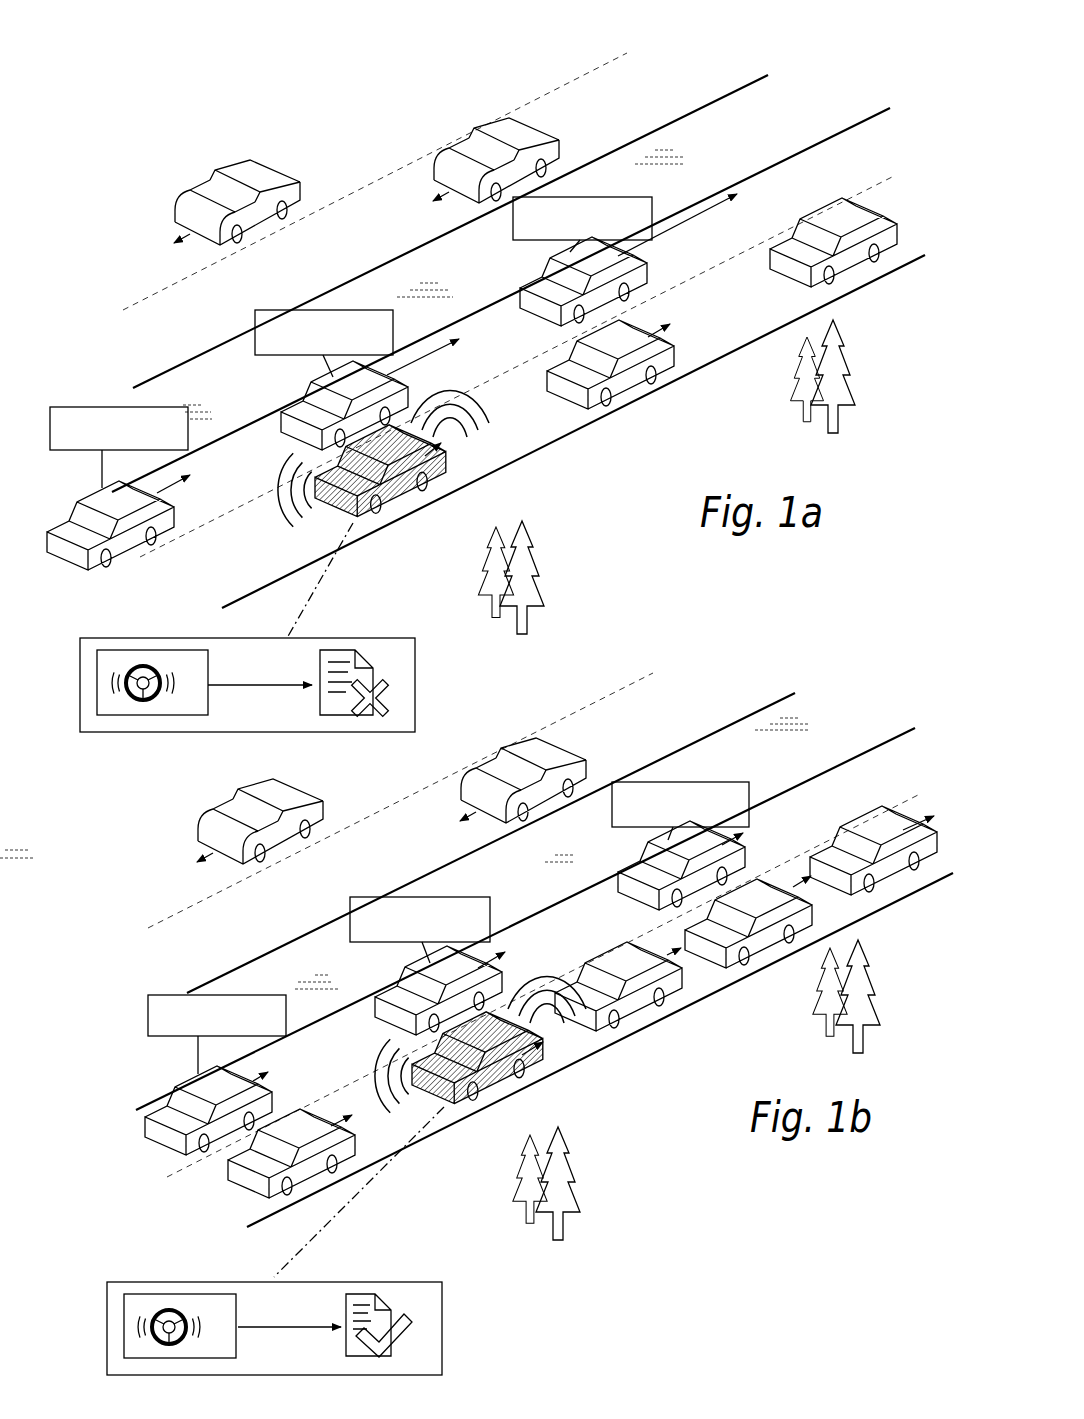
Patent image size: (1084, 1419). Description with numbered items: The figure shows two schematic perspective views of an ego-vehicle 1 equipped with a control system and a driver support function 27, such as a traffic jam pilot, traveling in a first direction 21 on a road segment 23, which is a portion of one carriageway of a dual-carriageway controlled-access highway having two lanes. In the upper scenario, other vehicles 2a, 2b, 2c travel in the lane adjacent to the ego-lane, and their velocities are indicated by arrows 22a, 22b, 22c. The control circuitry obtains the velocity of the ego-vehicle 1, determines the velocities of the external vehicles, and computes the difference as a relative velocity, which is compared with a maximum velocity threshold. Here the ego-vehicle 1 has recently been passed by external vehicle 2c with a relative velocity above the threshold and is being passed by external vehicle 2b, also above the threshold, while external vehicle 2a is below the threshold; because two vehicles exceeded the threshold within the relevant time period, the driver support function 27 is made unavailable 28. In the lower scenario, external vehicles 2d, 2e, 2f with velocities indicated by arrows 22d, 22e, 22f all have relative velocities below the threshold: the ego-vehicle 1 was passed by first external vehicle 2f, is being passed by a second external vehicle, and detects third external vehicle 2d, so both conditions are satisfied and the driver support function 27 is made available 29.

In FIG. 1A, the vehicle 1 is at (425, 487).
In FIG. 1B, the vehicle 1 is at (515, 1075).
In FIG. 1A, the external vehicle 2a is at (187, 535).
In FIG. 1A, the external vehicle 2b is at (297, 413).
In FIG. 1A, the external vehicle 2c is at (533, 278).
In FIG. 1B, the external vehicle 2d is at (158, 1119).
In FIG. 1B, the external vehicle 2e is at (387, 985).
In FIG. 1B, the external vehicle 2f is at (657, 857).
In FIG. 1A, the first direction 21 is at (447, 458).
In FIG. 1B, the first direction 21 is at (548, 1045).
In FIG. 1A, the velocity arrow 22a is at (173, 483).
In FIG. 1A, the velocity arrow 22b is at (437, 357).
In FIG. 1A, the velocity arrow 22c is at (707, 206).
In FIG. 1B, the velocity arrow 22d is at (276, 1079).
In FIG. 1B, the velocity arrow 22e is at (500, 952).
In FIG. 1B, the velocity arrow 22f is at (748, 832).
In FIG. 1A, the road segment 23 is at (699, 73).
In FIG. 1B, the road segment 23 is at (830, 703).
In FIG. 1A, the driver support function 27 is at (100, 716).
In FIG. 1B, the driver support function 27 is at (141, 1306).
In FIG. 1A, the unavailable state 28 is at (342, 650).
In FIG. 1B, the available state 29 is at (408, 1324).